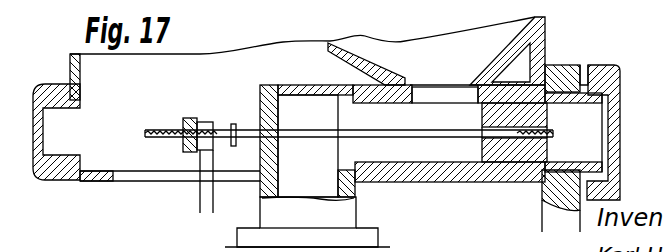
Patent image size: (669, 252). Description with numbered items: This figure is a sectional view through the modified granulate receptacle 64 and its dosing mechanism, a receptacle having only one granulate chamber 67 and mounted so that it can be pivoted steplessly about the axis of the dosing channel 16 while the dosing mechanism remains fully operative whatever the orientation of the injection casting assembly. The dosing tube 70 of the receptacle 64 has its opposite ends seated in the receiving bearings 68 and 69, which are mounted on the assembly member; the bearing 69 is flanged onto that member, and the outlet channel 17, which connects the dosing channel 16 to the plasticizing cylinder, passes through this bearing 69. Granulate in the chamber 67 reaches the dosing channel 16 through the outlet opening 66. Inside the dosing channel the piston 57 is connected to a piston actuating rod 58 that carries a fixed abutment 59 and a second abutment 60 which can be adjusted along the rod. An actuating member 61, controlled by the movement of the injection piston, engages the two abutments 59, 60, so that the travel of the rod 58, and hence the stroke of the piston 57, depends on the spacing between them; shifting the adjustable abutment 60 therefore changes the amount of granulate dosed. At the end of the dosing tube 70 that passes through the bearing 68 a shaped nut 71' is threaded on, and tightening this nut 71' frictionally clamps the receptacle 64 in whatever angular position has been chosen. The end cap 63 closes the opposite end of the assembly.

The dosing channel 16 is at (401, 117).
The outlet channel 17 is at (293, 102).
The piston 57 is at (533, 153).
The piston actuating rod 58 is at (250, 131).
The fixed abutment 59 is at (183, 122).
The adjustable abutment 60 is at (233, 123).
The actuating member 61 is at (207, 163).
The end cap 63 is at (45, 182).
The receptacle 64 is at (535, 50).
The outlet opening 66 is at (470, 93).
The granulate chamber 67 is at (427, 50).
The receiving bearing 68 is at (578, 66).
The receiving bearing 69 is at (268, 184).
The dosing tube 70 is at (519, 170).
The shaped nut 71' is at (622, 132).